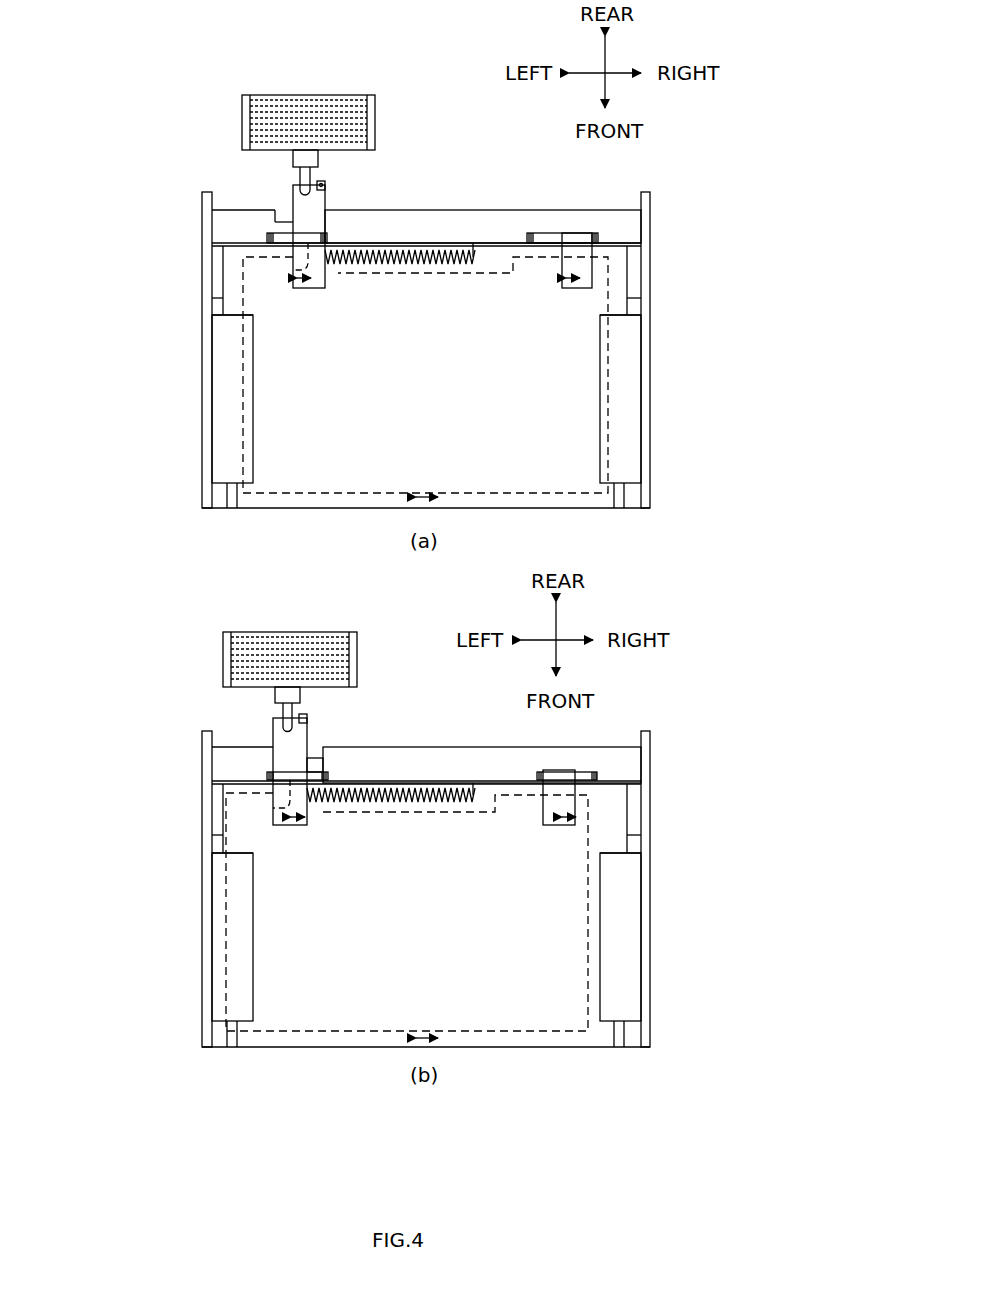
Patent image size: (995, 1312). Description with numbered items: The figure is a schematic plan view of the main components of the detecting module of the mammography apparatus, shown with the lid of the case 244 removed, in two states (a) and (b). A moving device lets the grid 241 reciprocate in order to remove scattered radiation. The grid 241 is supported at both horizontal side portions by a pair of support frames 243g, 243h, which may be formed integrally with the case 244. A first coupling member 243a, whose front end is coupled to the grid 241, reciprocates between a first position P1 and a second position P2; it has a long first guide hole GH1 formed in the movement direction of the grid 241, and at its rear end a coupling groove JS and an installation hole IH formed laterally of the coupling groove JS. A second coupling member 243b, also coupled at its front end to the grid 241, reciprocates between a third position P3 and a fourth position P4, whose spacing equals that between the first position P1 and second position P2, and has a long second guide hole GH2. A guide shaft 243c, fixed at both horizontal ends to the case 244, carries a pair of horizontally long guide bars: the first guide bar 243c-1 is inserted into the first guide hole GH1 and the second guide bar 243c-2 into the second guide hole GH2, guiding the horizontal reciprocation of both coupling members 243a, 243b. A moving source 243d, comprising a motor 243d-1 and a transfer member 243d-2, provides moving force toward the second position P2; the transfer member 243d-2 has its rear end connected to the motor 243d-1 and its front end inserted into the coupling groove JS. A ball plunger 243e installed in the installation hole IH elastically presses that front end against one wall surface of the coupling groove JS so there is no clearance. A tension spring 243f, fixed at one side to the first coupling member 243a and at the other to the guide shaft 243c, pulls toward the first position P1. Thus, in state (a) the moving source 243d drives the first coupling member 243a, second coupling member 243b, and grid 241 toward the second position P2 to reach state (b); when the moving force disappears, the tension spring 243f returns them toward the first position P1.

The grid 241 is at (468, 494).
The first coupling member 243a is at (293, 191).
The second coupling member 243b is at (592, 270).
The guide shaft 243c is at (483, 208).
The first guide bar 243c-1 is at (267, 243).
The second guide bar 243c-2 is at (545, 233).
The moving source 243d is at (210, 408).
The motor 243d-1 is at (242, 104).
The transfer member 243d-2 is at (293, 157).
The ball plunger 243e is at (323, 187).
The tension spring 243f is at (380, 265).
The support frame 243g is at (227, 490).
The support frame 243h is at (621, 490).
The case 244 is at (650, 237).
The first guide hole GH1 is at (293, 270).
The second guide hole GH2 is at (587, 240).
The installation hole IH is at (323, 184).
The coupling groove JS is at (320, 194).
The first position P1 is at (309, 283).
The second position P2 is at (298, 283).
The third position P3 is at (575, 283).
The fourth position P4 is at (565, 283).